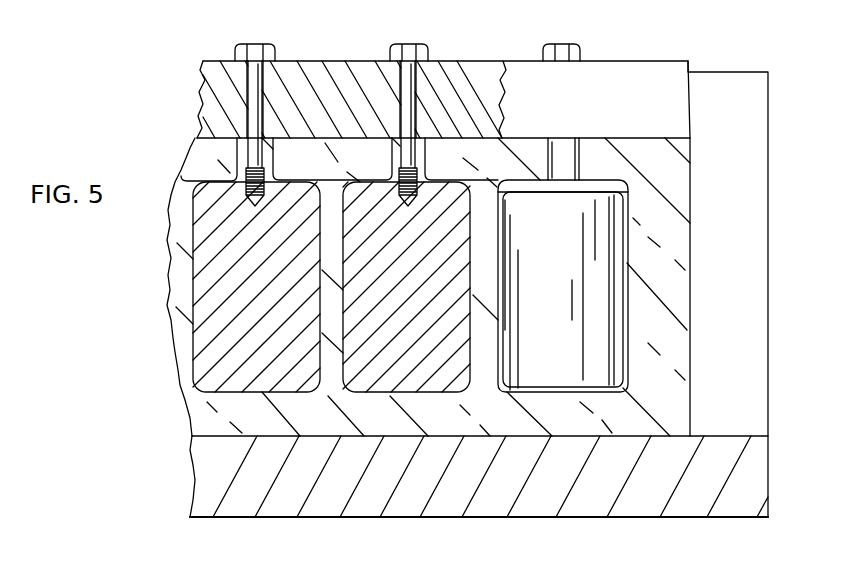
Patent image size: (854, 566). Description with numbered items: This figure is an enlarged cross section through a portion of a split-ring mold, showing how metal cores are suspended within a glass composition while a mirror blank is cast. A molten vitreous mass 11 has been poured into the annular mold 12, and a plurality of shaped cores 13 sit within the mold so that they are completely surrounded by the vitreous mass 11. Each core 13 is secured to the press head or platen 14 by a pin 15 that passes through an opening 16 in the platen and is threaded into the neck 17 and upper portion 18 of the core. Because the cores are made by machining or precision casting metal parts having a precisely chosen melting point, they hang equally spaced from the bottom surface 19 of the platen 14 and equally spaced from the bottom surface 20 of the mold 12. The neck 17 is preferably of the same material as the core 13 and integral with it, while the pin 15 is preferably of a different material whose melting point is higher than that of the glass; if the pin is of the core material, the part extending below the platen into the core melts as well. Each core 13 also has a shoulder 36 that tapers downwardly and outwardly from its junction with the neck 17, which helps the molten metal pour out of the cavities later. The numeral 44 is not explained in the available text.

The vitreous mass 11 is at (347, 171).
The annular mold 12 is at (326, 518).
The core 13 is at (265, 329).
The platen 14 is at (597, 82).
The pin 15 is at (253, 88).
The opening 16 is at (261, 100).
The neck 17 is at (258, 155).
The upper portion 18 is at (226, 203).
The bottom surface 19 is at (525, 180).
The bottom surface 20 is at (456, 436).
The shoulder 36 is at (302, 190).
The base bottom edge 44 is at (580, 565).